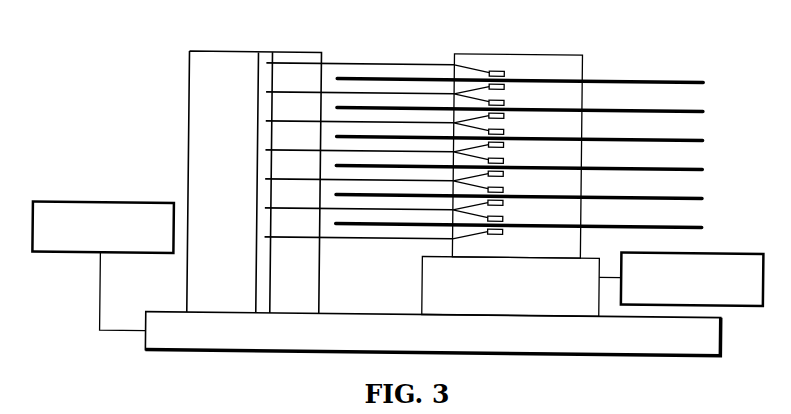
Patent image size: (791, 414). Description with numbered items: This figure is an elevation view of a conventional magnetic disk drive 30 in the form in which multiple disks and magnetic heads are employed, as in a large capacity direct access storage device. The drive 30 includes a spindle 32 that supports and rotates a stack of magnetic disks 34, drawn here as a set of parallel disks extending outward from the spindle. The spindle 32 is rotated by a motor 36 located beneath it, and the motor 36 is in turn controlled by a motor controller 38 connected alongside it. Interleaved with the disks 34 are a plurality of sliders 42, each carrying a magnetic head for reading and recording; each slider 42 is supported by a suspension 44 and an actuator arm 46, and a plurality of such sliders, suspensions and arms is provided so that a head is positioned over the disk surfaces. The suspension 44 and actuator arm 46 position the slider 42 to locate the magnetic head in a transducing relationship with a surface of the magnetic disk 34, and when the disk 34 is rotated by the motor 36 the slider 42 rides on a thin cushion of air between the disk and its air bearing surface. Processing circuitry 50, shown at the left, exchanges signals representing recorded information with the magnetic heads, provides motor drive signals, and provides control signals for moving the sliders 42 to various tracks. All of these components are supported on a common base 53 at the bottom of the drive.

The magnetic disk drive 30 is at (407, 201).
The spindle 32 is at (566, 49).
The magnetic disk 34 is at (685, 81).
The motor 36 is at (529, 296).
The motor controller 38 is at (753, 301).
The slider 42 is at (498, 95).
The suspension 44 is at (477, 95).
The actuator arm 46 is at (412, 92).
The processing circuitry 50 is at (85, 204).
The base 53 is at (198, 348).